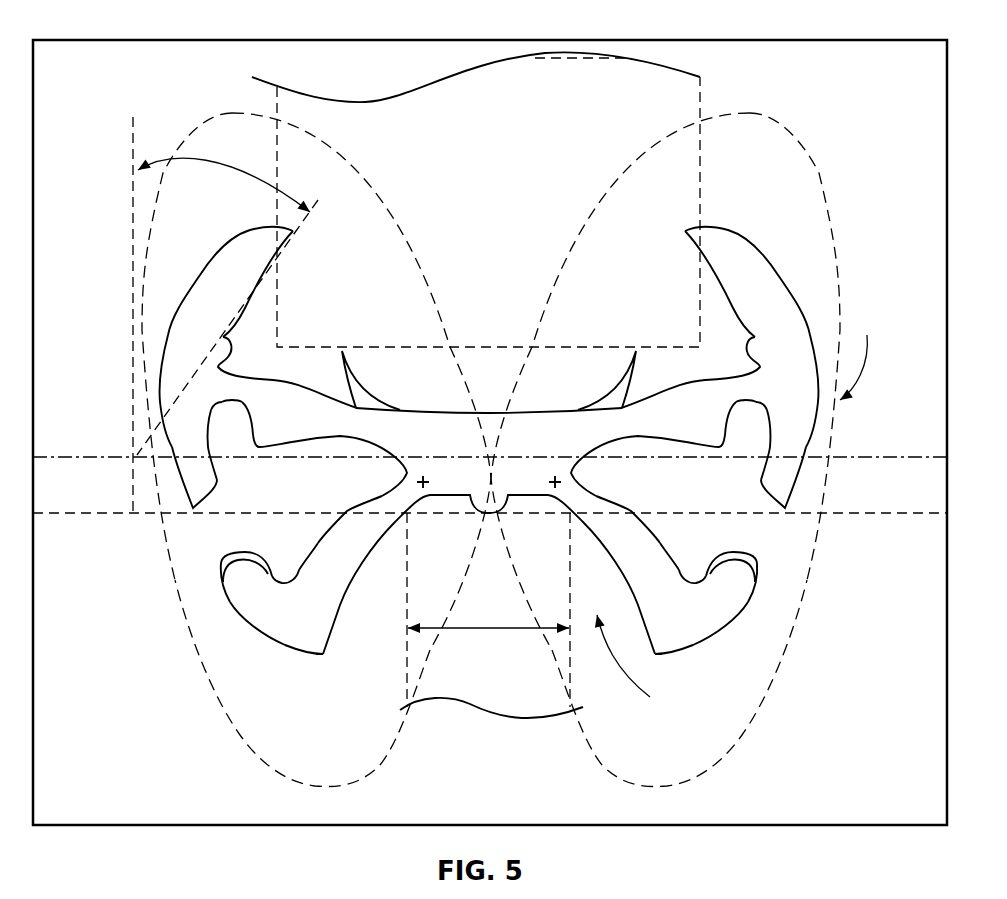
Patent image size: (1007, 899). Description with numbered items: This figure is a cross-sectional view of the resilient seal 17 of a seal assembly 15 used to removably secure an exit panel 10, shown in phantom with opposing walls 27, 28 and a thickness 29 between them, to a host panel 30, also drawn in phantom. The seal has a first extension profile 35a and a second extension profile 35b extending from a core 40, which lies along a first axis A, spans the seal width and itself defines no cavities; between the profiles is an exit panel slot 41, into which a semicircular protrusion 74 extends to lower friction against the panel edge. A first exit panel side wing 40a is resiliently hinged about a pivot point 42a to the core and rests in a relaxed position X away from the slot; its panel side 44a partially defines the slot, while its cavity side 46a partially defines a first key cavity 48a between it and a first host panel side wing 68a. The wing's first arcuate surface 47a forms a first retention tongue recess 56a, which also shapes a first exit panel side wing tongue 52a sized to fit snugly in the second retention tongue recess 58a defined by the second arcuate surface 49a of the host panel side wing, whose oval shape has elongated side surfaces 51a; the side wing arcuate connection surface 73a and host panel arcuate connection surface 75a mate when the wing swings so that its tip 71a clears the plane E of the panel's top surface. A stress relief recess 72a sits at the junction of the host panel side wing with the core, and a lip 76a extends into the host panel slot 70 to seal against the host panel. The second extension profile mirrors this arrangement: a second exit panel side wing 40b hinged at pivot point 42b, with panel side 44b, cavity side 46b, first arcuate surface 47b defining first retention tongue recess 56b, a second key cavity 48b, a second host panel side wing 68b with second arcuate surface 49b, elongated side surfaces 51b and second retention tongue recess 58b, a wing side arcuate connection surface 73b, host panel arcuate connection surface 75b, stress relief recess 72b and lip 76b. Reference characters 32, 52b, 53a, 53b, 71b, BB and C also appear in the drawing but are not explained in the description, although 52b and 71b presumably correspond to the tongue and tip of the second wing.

The exit panel 10 is at (498, 607).
The seal assembly 15 is at (840, 117).
The resilient seal 17 is at (688, 381).
The opposing wall 27 is at (417, 612).
The opposing wall 28 is at (571, 655).
The thickness 29 is at (497, 633).
The host panel 30 is at (492, 200).
The lower edge 32 is at (420, 652).
The first extension profile 35a is at (260, 763).
The second extension profile 35b is at (723, 748).
The core 40 is at (467, 451).
The first exit panel side wing 40a is at (283, 604).
The second exit panel side wing 40b is at (702, 627).
The exit panel slot 41 is at (642, 665).
The pivot point 42a is at (410, 487).
The pivot point 42b is at (568, 485).
The panel side 44a is at (377, 607).
The panel side 44b is at (633, 617).
The cavity side 46a is at (314, 545).
The cavity side 46b is at (660, 547).
The first arcuate surface 47a is at (292, 586).
The first arcuate surface 47b is at (690, 580).
The first key cavity 48a is at (250, 492).
The second key cavity 48b is at (732, 498).
The second arcuate surface 49a is at (248, 418).
The second arcuate surface 49b is at (758, 403).
The elongated side surfaces 51a is at (207, 422).
The elongated side surfaces 51b is at (727, 422).
The first exit panel side wing tongue 52a is at (233, 570).
The right wedge upper edge 52b is at (733, 565).
The left lobe 53a is at (397, 440).
The right lobe 53b is at (598, 442).
The first retention tongue recess 56a is at (221, 556).
The first retention tongue recess 56b is at (710, 557).
The second retention tongue recess 58a is at (212, 462).
The second retention tongue recess 58b is at (749, 403).
The first host panel side wing 68a is at (218, 278).
The second host panel side wing 68b is at (777, 295).
The host panel slot 70 is at (497, 383).
The first exit panel side wing tip 71a is at (317, 657).
The right wedge tip 71b is at (650, 655).
The stress relief recess 72a is at (221, 337).
The stress relief recess 72b is at (755, 337).
The side wing arcuate connection surface 73a is at (348, 513).
The wing side arcuate connection surface 73b is at (630, 511).
The protrusion 74 is at (521, 460).
The host panel arcuate connection surface 75a is at (307, 440).
The host panel arcuate connection surface 75b is at (660, 445).
The lip 76a is at (365, 393).
The lip 76b is at (617, 367).
The first axis A is at (912, 457).
The line BB is at (193, 158).
The line C is at (133, 140).
The plane E is at (912, 513).
The relaxed position X is at (262, 636).